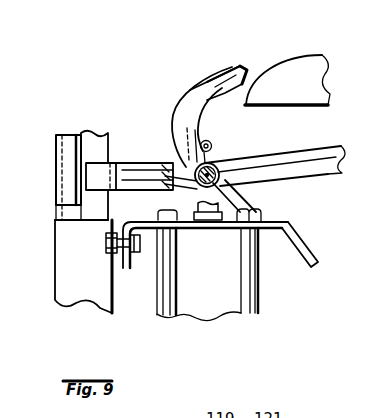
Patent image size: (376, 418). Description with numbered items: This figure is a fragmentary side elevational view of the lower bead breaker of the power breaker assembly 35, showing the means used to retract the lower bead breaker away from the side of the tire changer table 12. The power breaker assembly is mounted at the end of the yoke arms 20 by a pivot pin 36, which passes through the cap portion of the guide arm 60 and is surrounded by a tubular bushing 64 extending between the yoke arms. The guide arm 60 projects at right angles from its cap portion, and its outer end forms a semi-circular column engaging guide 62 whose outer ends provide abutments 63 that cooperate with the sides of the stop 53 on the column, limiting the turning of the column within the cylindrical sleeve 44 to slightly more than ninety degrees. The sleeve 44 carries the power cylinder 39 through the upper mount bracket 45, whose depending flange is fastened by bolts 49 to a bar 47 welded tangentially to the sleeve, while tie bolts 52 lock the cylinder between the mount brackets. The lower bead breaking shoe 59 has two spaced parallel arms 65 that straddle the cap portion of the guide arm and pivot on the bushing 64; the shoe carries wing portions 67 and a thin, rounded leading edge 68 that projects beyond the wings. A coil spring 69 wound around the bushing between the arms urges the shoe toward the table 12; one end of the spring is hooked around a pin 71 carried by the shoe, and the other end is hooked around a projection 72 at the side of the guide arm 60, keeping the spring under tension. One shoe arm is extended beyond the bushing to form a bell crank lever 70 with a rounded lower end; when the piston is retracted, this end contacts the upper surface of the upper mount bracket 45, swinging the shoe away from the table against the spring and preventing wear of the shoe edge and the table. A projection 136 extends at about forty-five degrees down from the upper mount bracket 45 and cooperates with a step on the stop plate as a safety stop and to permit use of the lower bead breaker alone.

The table 12 is at (323, 56).
The arms 20 is at (322, 171).
The power breaker assembly 35 is at (72, 211).
The pivot pin 36 is at (212, 173).
The power cylinder 39 is at (232, 297).
The cylindrical sleeve 44 is at (55, 262).
The upper mount bracket 45 is at (149, 232).
The bar 47 is at (113, 254).
The bolts 49 is at (106, 242).
The tie bolts 52 is at (178, 294).
The stop 53 is at (72, 148).
The lower bead breaking shoe 59 is at (222, 72).
The guide arm 60 is at (138, 185).
The column engaging guide 62 is at (98, 163).
The abutments 63 is at (77, 175).
The tubular bushing 64 is at (238, 181).
The arms 65 is at (178, 115).
The wing portions 67 is at (236, 82).
The leading edge 68 is at (246, 64).
The coil spring 69 is at (183, 160).
The bell crank lever 70 is at (243, 198).
The pin 71 is at (214, 120).
The projection 72 is at (158, 166).
The projection 136 is at (316, 255).